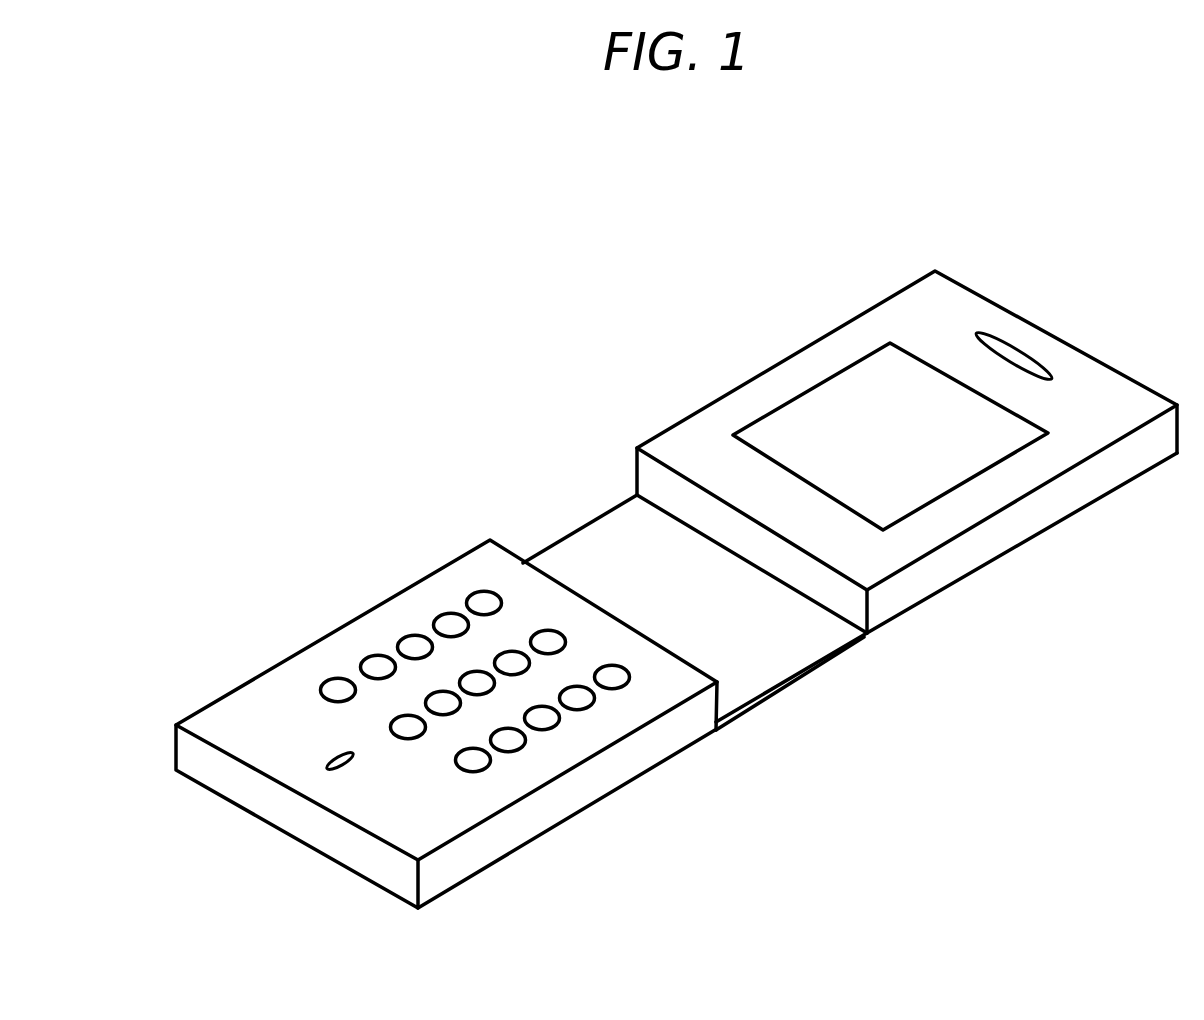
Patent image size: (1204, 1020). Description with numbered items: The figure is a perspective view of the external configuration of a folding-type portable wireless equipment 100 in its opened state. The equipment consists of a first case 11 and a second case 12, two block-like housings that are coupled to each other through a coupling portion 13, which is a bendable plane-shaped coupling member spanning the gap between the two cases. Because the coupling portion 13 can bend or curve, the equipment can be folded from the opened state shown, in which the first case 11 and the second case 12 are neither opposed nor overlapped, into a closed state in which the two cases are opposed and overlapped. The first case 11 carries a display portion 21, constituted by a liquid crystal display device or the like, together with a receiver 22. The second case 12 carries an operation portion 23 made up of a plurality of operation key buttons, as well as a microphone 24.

The mobile terminal 100 is at (1012, 213).
The first case 11 is at (1035, 517).
The second case 12 is at (560, 808).
The coupling portion 13 is at (775, 665).
The display portion 21 is at (838, 397).
The receiver 22 is at (1013, 352).
The operation portion 23 is at (370, 665).
The microphone 24 is at (330, 762).